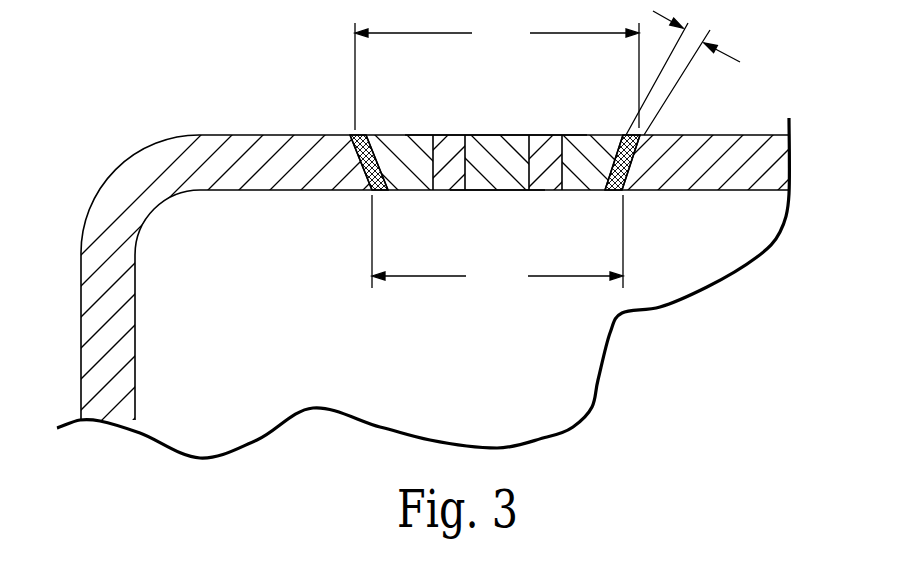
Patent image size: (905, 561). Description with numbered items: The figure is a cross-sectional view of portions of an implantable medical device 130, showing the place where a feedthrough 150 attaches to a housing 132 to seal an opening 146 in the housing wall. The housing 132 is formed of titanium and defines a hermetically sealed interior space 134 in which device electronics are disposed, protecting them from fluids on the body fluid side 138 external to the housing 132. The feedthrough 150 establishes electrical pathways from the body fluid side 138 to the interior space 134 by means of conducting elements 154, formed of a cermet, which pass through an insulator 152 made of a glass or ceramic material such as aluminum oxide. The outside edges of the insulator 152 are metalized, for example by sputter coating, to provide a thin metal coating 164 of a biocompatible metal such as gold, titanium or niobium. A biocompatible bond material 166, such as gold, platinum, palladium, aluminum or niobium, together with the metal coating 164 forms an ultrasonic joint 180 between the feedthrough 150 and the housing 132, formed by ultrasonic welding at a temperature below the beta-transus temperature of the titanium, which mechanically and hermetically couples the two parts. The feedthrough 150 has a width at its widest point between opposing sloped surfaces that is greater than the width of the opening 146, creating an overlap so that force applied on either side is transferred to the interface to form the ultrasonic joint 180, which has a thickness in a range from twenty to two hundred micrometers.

The implantable medical device 130 is at (87, 148).
The housing 132 is at (147, 152).
The interior space 134 is at (218, 287).
The body fluid side 138 is at (222, 38).
The opening 146 is at (528, 298).
The feedthrough 150 is at (381, 110).
The insulator 152 is at (583, 135).
The conducting elements 154 is at (545, 190).
The metalized coating 164 is at (392, 190).
The bond material 166 is at (371, 190).
The ultrasonic joint 180 is at (343, 128).